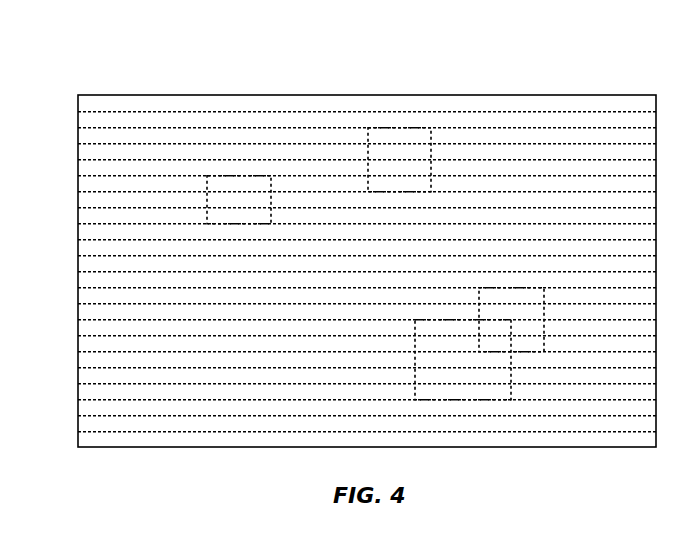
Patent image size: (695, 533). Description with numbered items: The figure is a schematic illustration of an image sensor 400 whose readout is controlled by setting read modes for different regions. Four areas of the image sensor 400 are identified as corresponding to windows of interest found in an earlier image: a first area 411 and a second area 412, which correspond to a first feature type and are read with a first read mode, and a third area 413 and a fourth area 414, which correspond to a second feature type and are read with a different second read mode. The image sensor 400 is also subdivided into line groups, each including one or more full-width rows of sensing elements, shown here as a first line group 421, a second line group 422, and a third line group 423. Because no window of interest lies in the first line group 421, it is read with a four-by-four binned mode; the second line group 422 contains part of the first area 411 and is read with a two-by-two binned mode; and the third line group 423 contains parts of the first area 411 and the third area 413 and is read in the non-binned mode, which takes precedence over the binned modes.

The image sensor 400 is at (341, 248).
The first area 411 is at (417, 128).
The second area 412 is at (526, 288).
The third area 413 is at (256, 176).
The fourth area 414 is at (432, 320).
The first line group 421 is at (86, 120).
The second line group 422 is at (86, 152).
The third line group 423 is at (86, 184).